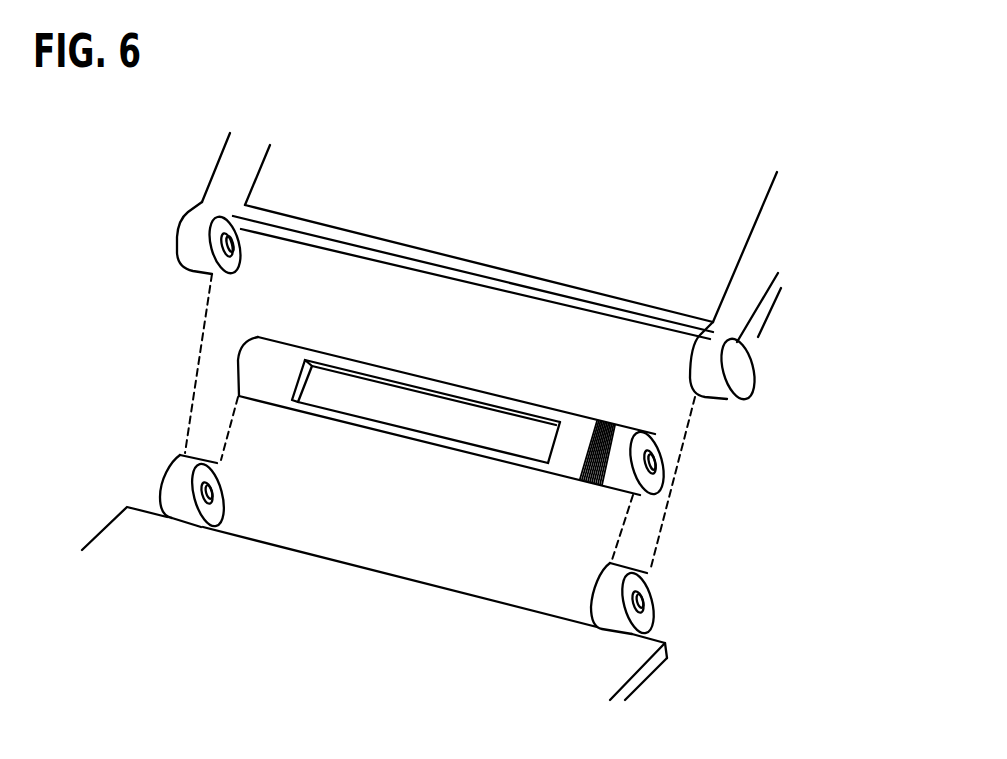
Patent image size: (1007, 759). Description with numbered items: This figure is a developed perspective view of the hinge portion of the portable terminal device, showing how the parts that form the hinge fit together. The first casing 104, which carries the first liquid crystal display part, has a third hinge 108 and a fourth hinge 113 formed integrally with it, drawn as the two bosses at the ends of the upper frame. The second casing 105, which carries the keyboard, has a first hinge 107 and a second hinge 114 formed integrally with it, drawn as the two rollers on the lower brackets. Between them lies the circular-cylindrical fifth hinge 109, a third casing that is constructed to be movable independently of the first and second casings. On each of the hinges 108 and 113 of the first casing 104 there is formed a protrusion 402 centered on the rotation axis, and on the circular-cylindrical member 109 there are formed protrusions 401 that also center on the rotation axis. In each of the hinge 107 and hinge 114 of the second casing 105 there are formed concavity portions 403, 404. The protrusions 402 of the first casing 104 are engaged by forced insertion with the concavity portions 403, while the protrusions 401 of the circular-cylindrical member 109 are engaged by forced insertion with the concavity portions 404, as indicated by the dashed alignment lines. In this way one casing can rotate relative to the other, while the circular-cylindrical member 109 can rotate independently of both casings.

The first casing 104 is at (784, 245).
The second casing 105 is at (632, 687).
The first hinge 107 is at (600, 625).
The third hinge 108 is at (708, 365).
The fifth hinge 109 is at (300, 346).
The fourth hinge 113 is at (190, 227).
The second hinge 114 is at (178, 508).
The protrusion 401 is at (235, 362).
The protrusion 402 is at (232, 245).
The concavity portion 403 is at (167, 473).
The concavity portion 404 is at (215, 495).